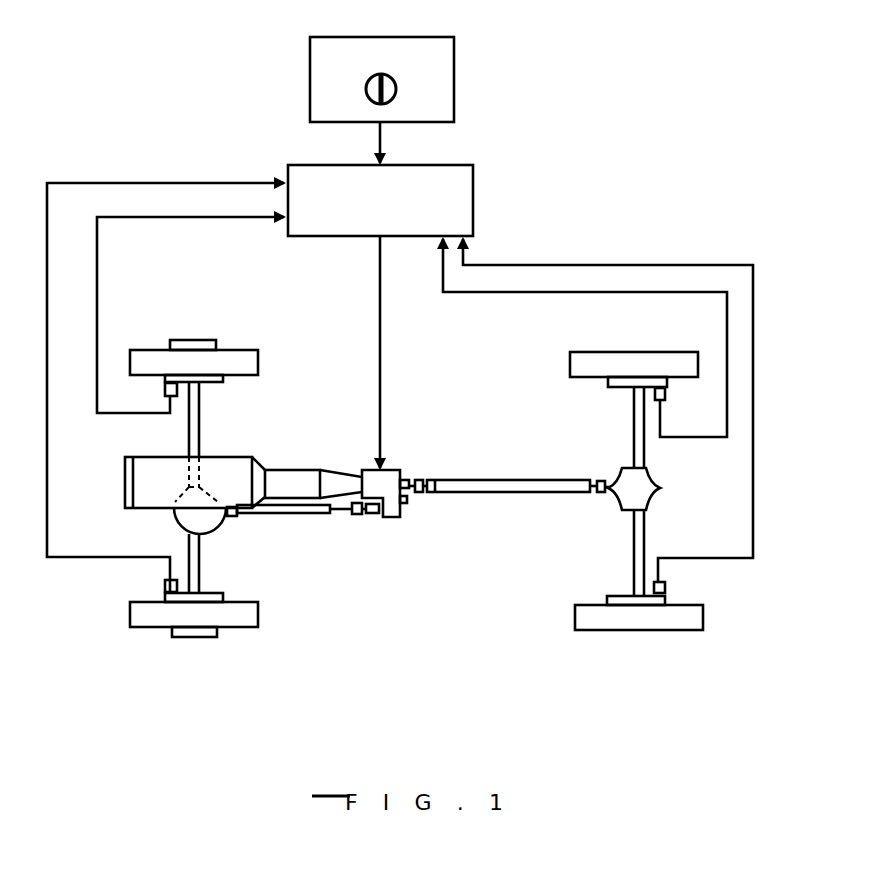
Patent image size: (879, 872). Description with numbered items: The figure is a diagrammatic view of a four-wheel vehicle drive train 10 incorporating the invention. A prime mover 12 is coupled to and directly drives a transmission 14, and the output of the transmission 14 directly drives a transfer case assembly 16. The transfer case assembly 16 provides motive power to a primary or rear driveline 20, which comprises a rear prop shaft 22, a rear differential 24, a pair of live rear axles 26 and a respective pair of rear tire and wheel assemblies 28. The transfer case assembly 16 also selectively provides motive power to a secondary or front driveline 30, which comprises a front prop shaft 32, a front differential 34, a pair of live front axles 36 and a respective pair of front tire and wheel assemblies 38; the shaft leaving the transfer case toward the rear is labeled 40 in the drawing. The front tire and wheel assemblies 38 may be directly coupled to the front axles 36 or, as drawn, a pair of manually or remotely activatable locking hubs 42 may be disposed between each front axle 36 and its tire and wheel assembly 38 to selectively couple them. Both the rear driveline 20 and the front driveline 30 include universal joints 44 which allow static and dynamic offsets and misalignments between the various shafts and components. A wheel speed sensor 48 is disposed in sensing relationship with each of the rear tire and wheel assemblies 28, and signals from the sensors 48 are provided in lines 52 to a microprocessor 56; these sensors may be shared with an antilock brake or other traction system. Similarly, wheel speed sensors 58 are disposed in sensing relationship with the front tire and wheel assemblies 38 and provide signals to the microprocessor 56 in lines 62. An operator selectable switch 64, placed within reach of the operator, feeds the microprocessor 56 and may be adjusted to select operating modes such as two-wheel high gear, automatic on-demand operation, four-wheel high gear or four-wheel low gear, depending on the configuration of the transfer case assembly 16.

The four-wheel vehicle drive train 10 is at (446, 627).
The prime mover 12 is at (148, 498).
The transmission 14 is at (282, 472).
The transfer case assembly 16 is at (391, 522).
The primary or rear driveline 20 is at (488, 401).
The primary or rear prop shaft 22 is at (548, 484).
The primary or rear differential 24 is at (660, 490).
The primary or rear axles 26 is at (634, 421).
The primary or rear tire and wheel assemblies 28 is at (581, 341).
The secondary or front driveline 30 is at (324, 594).
The secondary or front prop shaft 32 is at (292, 513).
The secondary or front differential 34 is at (208, 525).
The secondary or front axles 36 is at (200, 422).
The secondary or front tire and wheel assemblies 38 is at (206, 316).
The rear output shaft 40 is at (410, 480).
The locking hubs 42 is at (175, 340).
The universal joints 44 is at (355, 514).
The wheel speed sensor 48 is at (665, 395).
The lines 52 is at (670, 292).
The microprocessor 56 is at (443, 165).
The wheel speed sensors 58 is at (165, 389).
The lines 62 is at (97, 253).
The operator selectable switch 64 is at (454, 46).